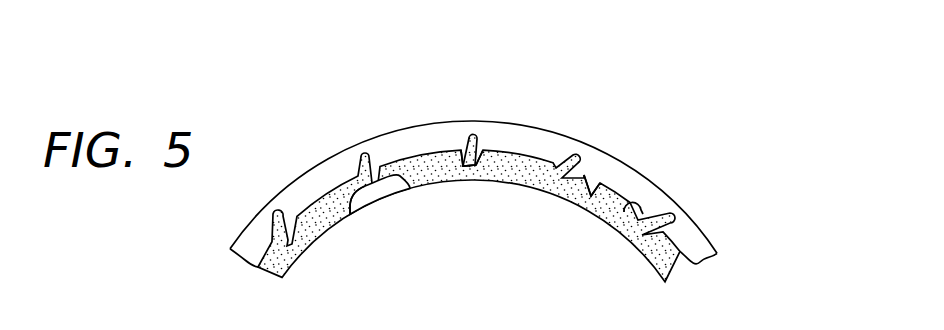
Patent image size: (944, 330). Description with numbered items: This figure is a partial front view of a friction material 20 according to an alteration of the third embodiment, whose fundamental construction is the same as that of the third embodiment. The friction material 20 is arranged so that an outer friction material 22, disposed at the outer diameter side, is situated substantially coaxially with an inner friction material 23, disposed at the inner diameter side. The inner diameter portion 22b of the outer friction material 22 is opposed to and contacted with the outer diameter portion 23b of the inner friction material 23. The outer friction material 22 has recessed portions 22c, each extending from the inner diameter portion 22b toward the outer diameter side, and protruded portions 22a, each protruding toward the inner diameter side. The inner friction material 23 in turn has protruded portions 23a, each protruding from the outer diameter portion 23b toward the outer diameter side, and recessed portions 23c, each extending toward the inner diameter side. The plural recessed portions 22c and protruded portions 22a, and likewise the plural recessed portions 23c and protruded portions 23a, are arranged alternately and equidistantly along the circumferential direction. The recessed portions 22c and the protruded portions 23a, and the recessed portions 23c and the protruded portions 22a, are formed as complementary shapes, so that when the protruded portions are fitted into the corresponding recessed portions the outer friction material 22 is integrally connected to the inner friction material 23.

The friction material 20 is at (508, 176).
The outer friction material 22 is at (285, 203).
The protruded portion 22a is at (407, 181).
The inner diameter portion 22b is at (592, 192).
The recessed portion 22c is at (475, 136).
The inner friction material 23 is at (312, 243).
The protruded portion 23a is at (468, 137).
The outer diameter portion 23b is at (624, 212).
The recessed portion 23c is at (351, 212).